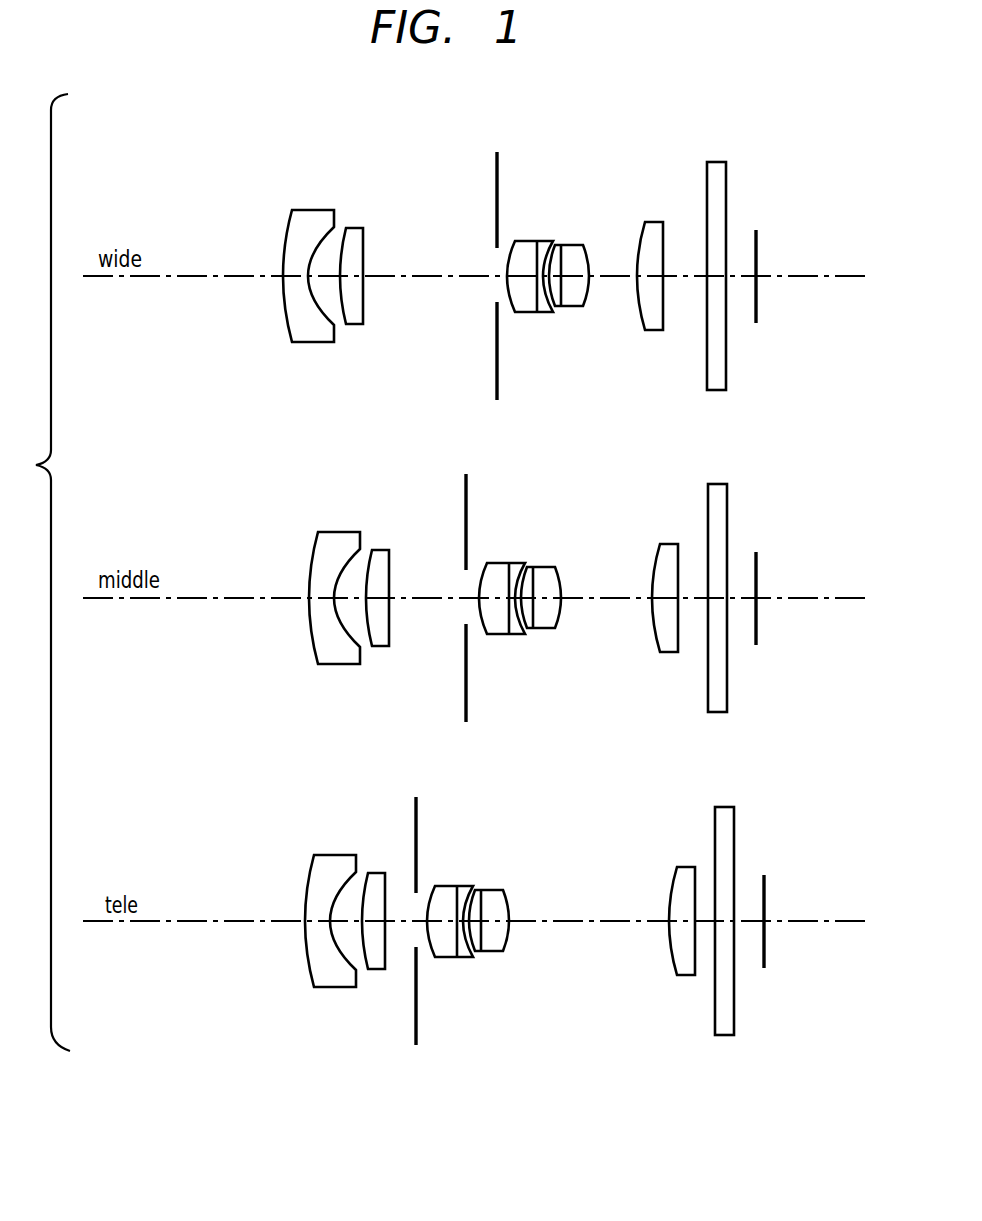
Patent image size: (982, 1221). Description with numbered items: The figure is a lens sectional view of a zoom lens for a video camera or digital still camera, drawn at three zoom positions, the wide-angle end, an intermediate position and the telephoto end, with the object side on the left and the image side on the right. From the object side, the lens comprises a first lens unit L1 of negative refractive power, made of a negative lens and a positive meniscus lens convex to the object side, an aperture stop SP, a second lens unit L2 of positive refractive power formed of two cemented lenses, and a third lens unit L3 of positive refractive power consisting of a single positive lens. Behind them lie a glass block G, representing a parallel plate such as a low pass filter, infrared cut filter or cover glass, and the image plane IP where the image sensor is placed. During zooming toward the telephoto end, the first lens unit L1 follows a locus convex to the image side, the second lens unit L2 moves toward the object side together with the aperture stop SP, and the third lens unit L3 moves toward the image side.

The first lens unit L1 is at (270, 180).
The second lens unit L2 is at (507, 180).
The third lens unit L3 is at (628, 180).
The aperture stop SP is at (494, 162).
The glass block G is at (716, 162).
The image plane IP is at (758, 242).